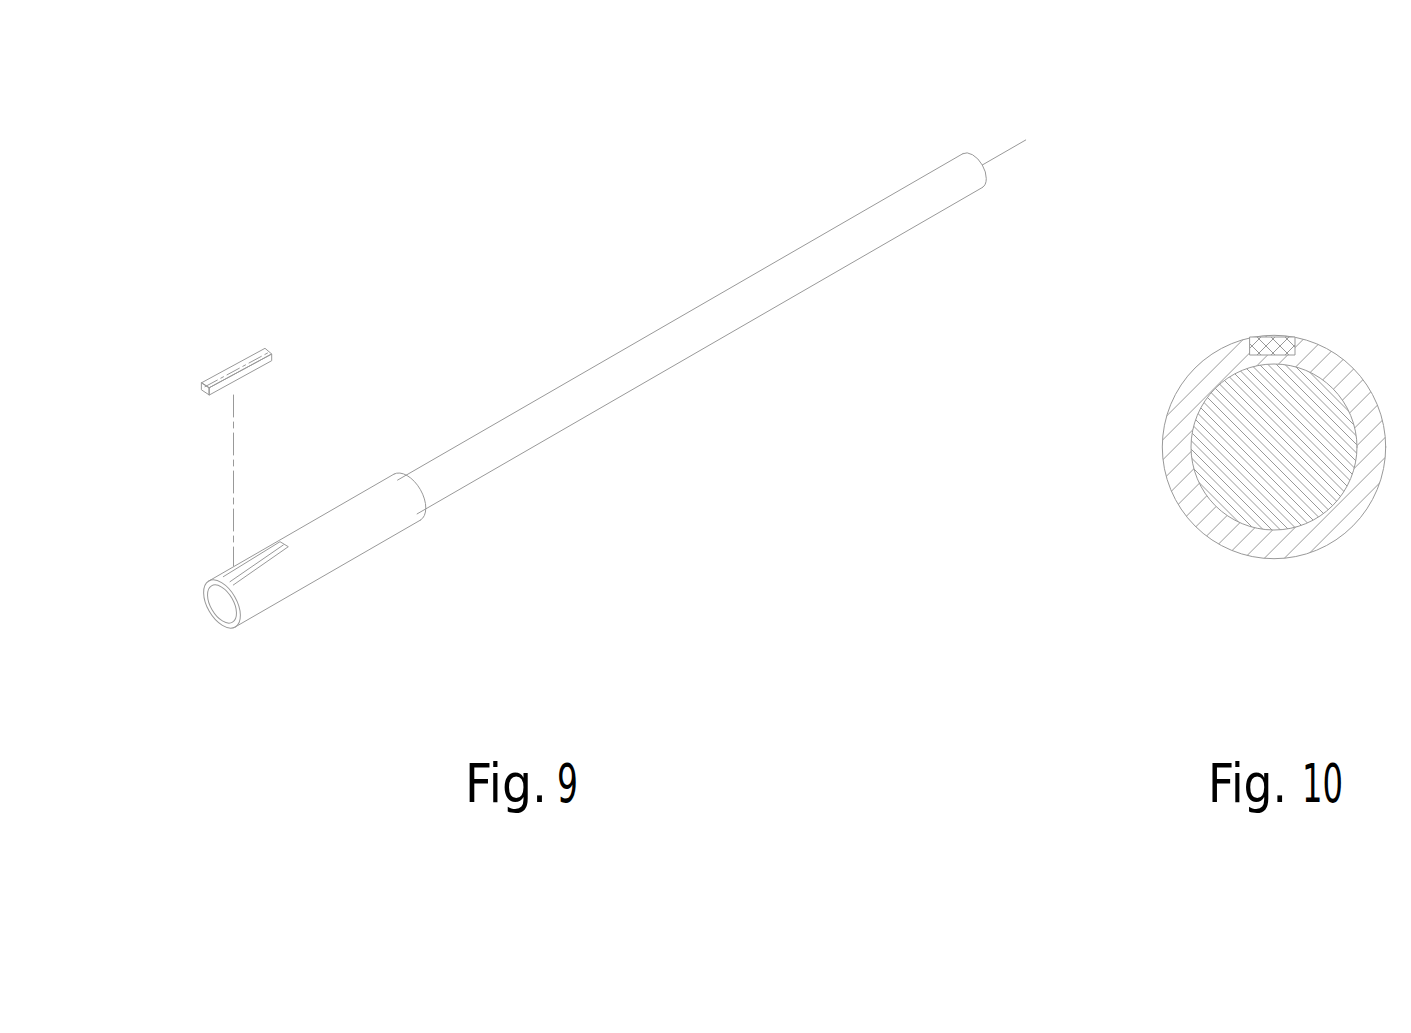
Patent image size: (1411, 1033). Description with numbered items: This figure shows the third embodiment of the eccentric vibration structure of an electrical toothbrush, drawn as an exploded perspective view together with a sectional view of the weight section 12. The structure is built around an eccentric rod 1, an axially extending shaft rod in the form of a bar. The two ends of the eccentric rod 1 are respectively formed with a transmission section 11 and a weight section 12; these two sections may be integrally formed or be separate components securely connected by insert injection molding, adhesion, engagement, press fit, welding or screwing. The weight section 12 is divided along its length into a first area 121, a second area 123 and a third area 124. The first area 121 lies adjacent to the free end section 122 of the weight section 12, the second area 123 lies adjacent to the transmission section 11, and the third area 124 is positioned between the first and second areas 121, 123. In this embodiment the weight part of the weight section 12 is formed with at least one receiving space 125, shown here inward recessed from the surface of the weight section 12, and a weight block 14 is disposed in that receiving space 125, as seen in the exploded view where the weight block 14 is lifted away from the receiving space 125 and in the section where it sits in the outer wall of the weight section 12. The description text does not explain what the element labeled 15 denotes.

In FIG. 9, the eccentric rod 1 is at (588, 419).
In FIG. 10, the eccentric rod 1 is at (1275, 448).
In FIG. 9, the transmission section 11 is at (712, 327).
In FIG. 9, the weight section 12 is at (388, 583).
In FIG. 10, the weight section 12 is at (1239, 438).
In FIG. 9, the first area 121 is at (307, 583).
In FIG. 9, the free end section 122 is at (234, 657).
In FIG. 9, the second area 123 is at (352, 582).
In FIG. 9, the third area 124 is at (460, 541).
In FIG. 9, the receiving space 125 is at (277, 498).
In FIG. 9, the weight block 14 is at (211, 410).
In FIG. 10, the weight block 14 is at (1241, 342).
In FIG. 9, the bore 15 is at (218, 603).